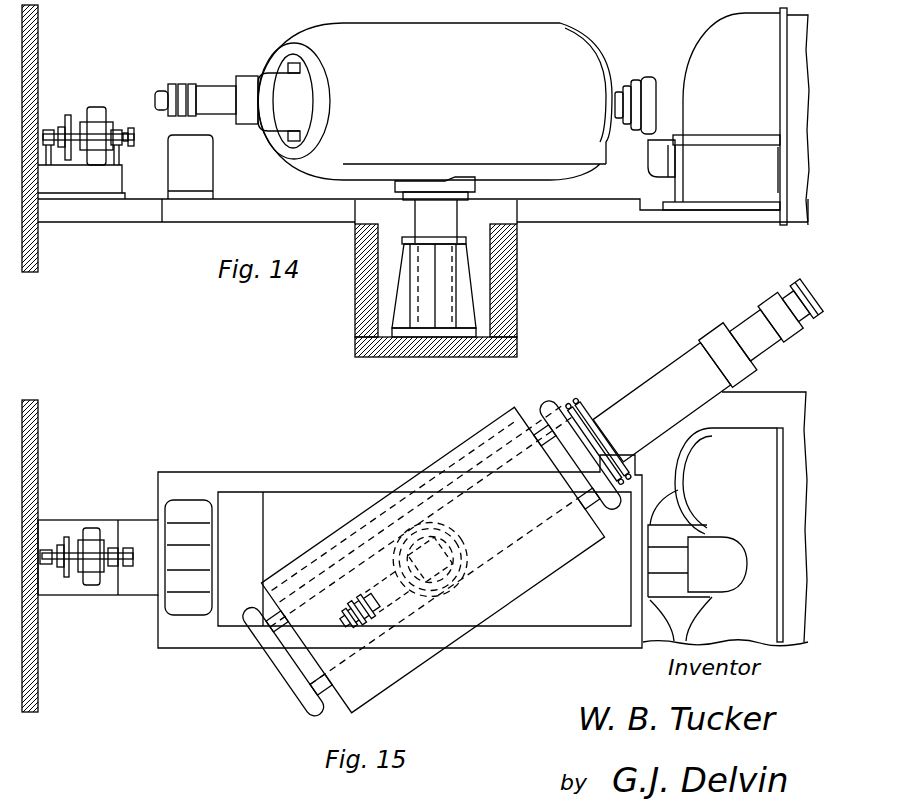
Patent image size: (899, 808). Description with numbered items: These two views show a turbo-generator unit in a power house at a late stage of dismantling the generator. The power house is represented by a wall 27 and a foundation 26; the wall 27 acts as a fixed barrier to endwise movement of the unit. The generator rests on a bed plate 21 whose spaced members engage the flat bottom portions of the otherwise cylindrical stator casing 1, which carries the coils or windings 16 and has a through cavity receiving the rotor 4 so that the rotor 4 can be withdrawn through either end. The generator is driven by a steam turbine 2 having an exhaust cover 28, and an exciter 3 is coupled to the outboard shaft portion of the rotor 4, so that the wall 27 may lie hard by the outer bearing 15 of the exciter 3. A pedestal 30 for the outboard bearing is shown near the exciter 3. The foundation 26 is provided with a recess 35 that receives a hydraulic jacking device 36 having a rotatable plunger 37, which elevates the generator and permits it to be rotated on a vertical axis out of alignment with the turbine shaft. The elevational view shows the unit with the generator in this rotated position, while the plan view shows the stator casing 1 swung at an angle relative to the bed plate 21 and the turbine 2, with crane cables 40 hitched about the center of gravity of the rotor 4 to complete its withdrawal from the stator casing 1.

In FIG. 14, the stator casing 1 is at (455, 23).
In FIG. 14, the steam turbine 2 is at (728, 116).
In FIG. 15, the steam turbine 2 is at (792, 428).
In FIG. 14, the exciter 3 is at (97, 108).
In FIG. 15, the exciter 3 is at (94, 528).
In FIG. 14, the rotor 4 is at (250, 122).
In FIG. 15, the rotor 4 is at (652, 386).
In FIG. 14, the outer bearing 15 is at (48, 130).
In FIG. 15, the outer bearing 15 is at (46, 552).
In FIG. 14, the coils or windings 16 is at (287, 46).
In FIG. 15, the coils or windings 16 is at (556, 412).
In FIG. 14, the bed plate 21 is at (193, 218).
In FIG. 15, the bed plate 21 is at (186, 648).
In FIG. 14, the foundation 26 is at (517, 251).
In FIG. 15, the wall 27 is at (38, 470).
In FIG. 15, the exhaust cover 28 is at (737, 437).
In FIG. 14, the pedestal 30 is at (170, 165).
In FIG. 15, the pedestal 30 is at (168, 578).
In FIG. 14, the recess 35 is at (382, 323).
In FIG. 14, the jacking device 36 is at (470, 252).
In FIG. 14, the rotatable plunger 37 is at (416, 215).
In FIG. 15, the rotatable plunger 37 is at (418, 534).
In FIG. 15, the cables 40 is at (589, 415).